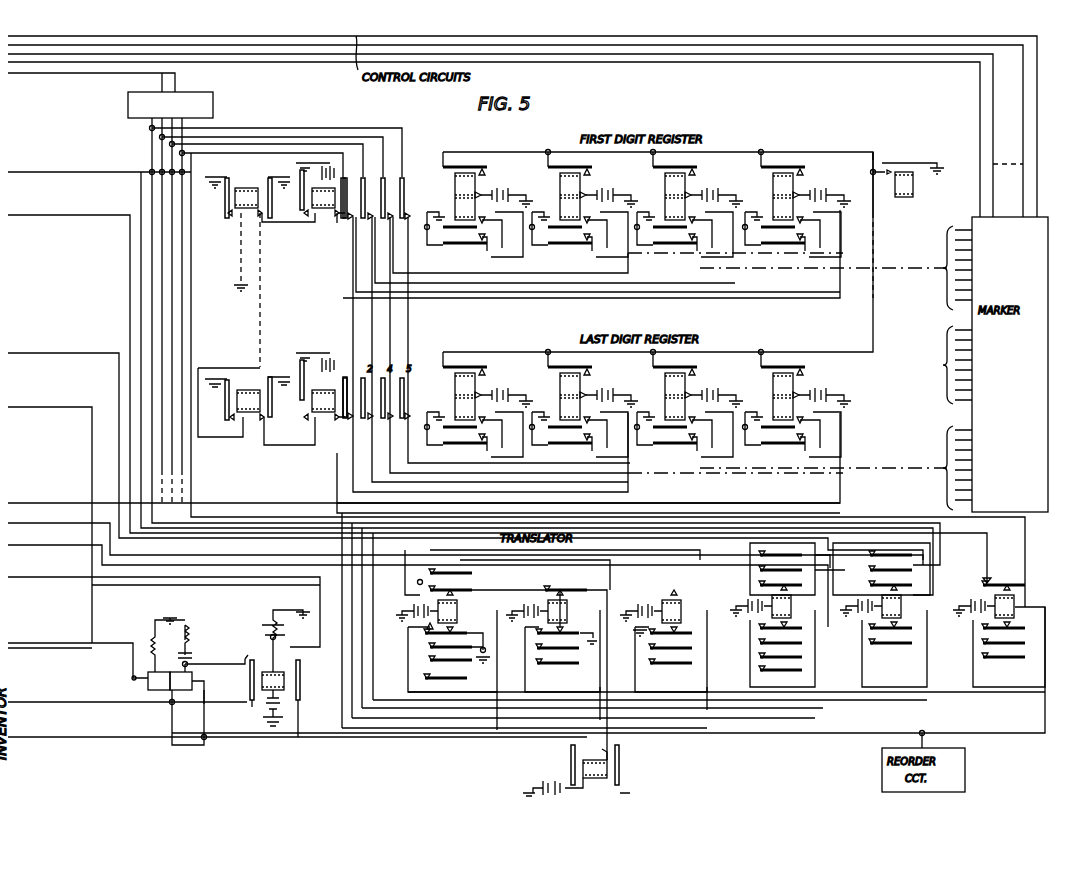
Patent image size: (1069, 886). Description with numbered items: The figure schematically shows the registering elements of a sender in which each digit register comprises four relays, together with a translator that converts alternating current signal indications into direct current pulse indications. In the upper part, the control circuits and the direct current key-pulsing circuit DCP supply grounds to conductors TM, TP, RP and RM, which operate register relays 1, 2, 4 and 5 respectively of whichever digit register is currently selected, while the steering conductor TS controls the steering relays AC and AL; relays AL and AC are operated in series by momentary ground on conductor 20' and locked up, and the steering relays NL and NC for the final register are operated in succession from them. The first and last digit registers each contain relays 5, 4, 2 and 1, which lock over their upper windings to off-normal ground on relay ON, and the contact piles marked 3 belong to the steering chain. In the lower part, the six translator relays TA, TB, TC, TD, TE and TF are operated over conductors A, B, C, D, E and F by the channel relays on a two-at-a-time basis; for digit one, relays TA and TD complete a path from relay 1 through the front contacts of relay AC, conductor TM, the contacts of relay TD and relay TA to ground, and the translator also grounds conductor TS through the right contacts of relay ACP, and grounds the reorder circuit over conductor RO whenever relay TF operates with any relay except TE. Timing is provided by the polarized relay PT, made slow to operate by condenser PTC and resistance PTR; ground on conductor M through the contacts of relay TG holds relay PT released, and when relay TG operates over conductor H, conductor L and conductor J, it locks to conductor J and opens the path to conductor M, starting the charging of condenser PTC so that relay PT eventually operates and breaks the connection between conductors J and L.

The direct current key-pulsing circuit DCP is at (214, 97).
The conductor TM is at (192, 284).
The conductor TP is at (183, 302).
The conductor RP is at (173, 320).
The conductor RM is at (163, 337).
The steering conductor TS is at (153, 355).
The conductor F is at (46, 157).
The conductor E is at (47, 200).
The conductor D is at (50, 336).
The reorder conductor RO is at (56, 398).
The conductor C is at (53, 507).
The conductor B is at (53, 529).
The conductor H is at (55, 562).
The conductor L is at (52, 627).
The conductor A is at (52, 650).
The conductor M is at (61, 695).
The conductor J is at (55, 721).
The steering relay AL is at (255, 186).
The steering relay AC is at (323, 215).
The conductor 20' is at (226, 252).
The steering relay NL is at (257, 386).
The steering relay NC is at (323, 420).
The pulsing contacts 3 is at (376, 197).
The register relay 5 is at (454, 188).
The register relay 4 is at (559, 188).
The register relay 2 is at (664, 188).
The register relay 1 is at (772, 188).
The relay ON is at (914, 188).
The translator relay TA is at (458, 615).
The translator relay TB is at (568, 615).
The translator relay TC is at (681, 615).
The translator relay TD is at (772, 599).
The translator relay TE is at (880, 618).
The translator relay TF is at (1015, 600).
The relay ACP is at (598, 778).
The polarized relay PT is at (135, 690).
The resistance PTR is at (195, 630).
The condenser PTC is at (195, 650).
The relay TG is at (258, 700).